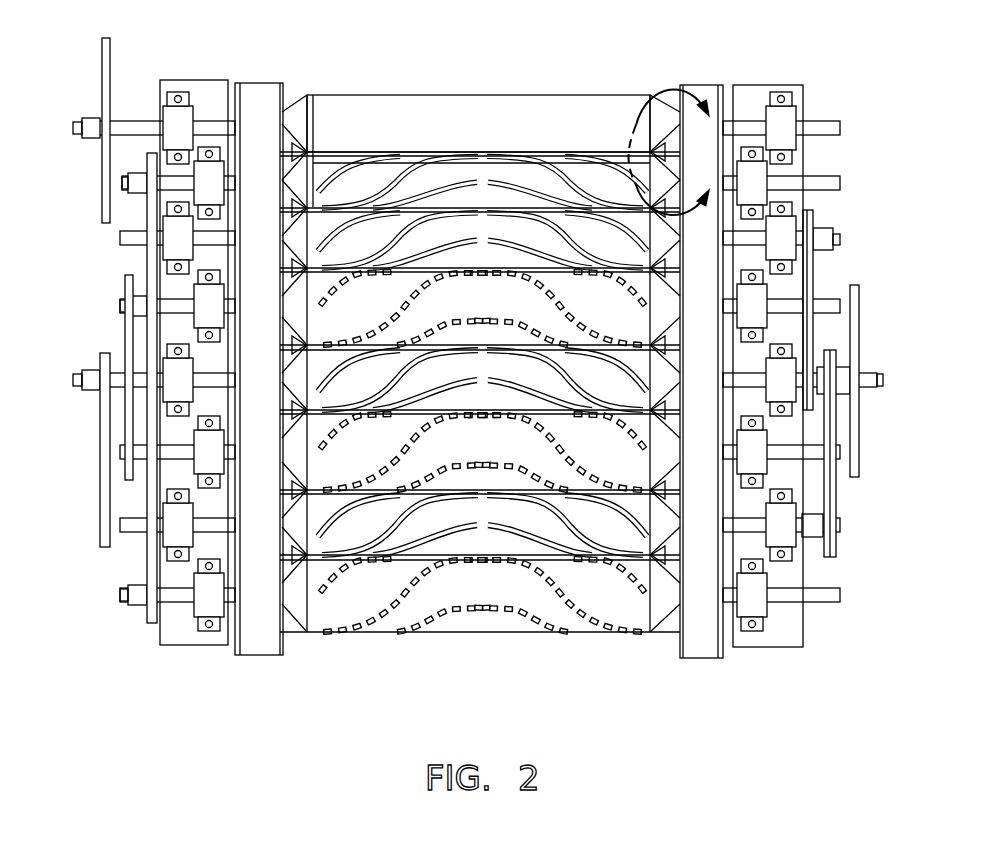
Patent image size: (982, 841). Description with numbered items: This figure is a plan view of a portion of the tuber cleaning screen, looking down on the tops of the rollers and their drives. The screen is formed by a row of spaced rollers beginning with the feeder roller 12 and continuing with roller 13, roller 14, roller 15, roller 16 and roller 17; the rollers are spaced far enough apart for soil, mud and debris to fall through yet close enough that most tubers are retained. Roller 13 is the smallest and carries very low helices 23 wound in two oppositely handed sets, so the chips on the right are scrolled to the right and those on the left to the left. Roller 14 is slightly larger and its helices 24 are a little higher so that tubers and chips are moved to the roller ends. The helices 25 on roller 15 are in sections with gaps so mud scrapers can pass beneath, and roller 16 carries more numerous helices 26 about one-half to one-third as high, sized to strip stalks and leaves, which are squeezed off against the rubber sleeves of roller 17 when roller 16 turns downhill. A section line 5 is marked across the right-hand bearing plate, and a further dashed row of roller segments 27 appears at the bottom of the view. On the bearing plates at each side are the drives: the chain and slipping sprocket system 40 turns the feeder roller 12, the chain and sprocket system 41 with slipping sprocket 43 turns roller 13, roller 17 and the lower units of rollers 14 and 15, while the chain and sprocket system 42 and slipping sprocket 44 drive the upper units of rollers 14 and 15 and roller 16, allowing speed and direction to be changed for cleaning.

The section line 5- 5 is at (669, 152).
The feeder roller 12 is at (408, 95).
The roller 13 is at (335, 152).
The roller 14 is at (307, 97).
The roller 15 is at (310, 310).
The roller 16 is at (315, 384).
The roller 17 is at (350, 633).
The helices 23 is at (585, 160).
The helices 24 is at (645, 213).
The helices 25 is at (620, 345).
The helices 26 is at (633, 372).
The bottom roller row 27 is at (580, 617).
The chain and slipping sprocket system 40 is at (101, 66).
The chain and sprocket system 41 is at (100, 385).
The chain and sprocket system 42 is at (862, 322).
The slipping sprocket 43 is at (147, 197).
The slipping sprocket 44 is at (813, 215).